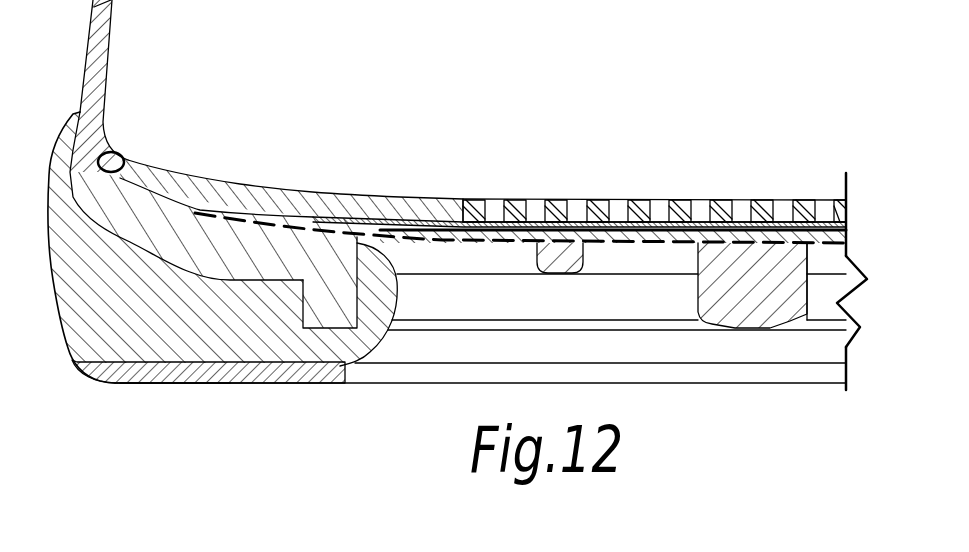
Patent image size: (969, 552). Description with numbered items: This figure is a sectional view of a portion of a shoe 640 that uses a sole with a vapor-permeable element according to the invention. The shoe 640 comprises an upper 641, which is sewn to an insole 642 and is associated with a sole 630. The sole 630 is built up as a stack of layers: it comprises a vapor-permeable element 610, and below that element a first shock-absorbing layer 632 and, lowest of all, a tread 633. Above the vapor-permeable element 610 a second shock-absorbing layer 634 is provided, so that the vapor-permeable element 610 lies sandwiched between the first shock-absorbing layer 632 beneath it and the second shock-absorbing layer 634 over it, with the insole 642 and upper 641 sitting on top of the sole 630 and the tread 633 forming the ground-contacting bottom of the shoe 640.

The vapor-permeable element 610 is at (211, 264).
The sole 630 is at (55, 326).
The first shock-absorbing layer 632 is at (277, 337).
The tread 633 is at (327, 376).
The second shock-absorbing layer 634 is at (460, 197).
The shoe 640 is at (174, 416).
The upper 641 is at (106, 72).
The insole 642 is at (230, 185).